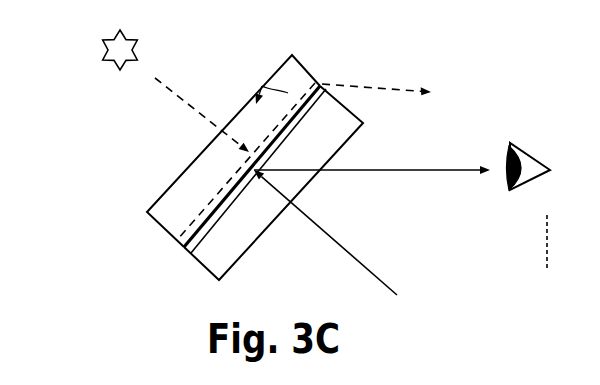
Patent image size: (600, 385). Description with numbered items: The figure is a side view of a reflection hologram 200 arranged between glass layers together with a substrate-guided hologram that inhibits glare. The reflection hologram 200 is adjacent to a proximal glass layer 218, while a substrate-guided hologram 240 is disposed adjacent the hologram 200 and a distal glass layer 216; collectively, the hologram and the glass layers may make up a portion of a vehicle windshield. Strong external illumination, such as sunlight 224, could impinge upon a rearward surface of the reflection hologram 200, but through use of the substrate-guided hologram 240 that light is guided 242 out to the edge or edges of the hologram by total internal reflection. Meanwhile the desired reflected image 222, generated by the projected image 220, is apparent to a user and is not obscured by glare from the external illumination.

The reflection hologram 200 is at (197, 176).
The distal glass layer 216 is at (188, 178).
The proximal glass layer 218 is at (240, 240).
The substrate-guided hologram 240 is at (187, 215).
The guided light 242 is at (256, 133).
The sunlight 224 is at (166, 86).
The projected image 220 is at (352, 244).
The reflected image 222 is at (450, 171).